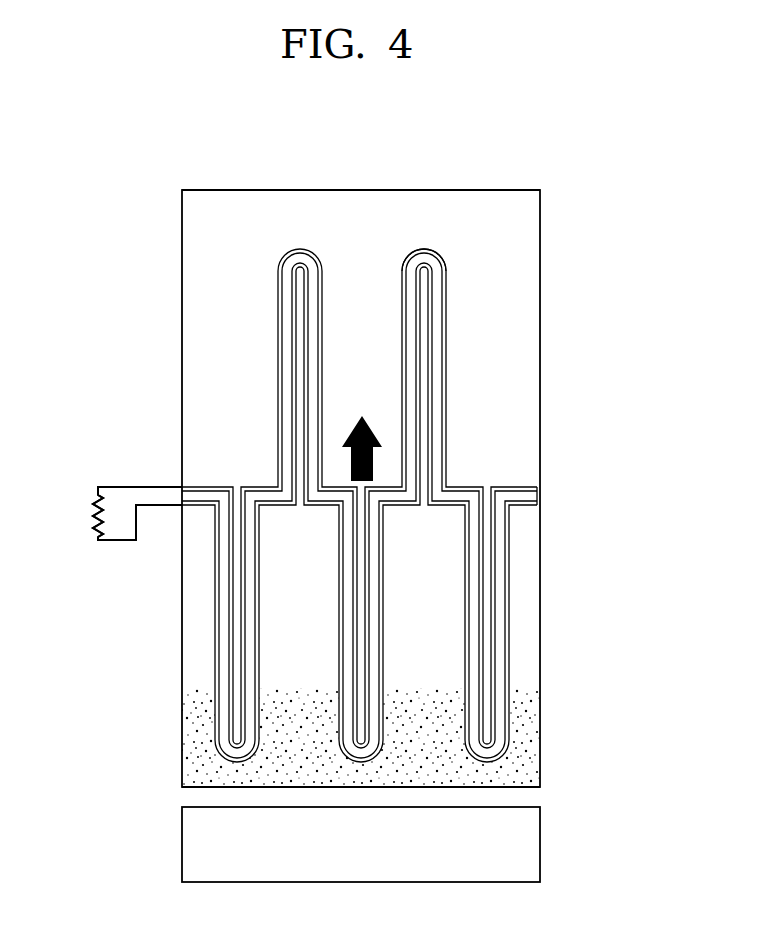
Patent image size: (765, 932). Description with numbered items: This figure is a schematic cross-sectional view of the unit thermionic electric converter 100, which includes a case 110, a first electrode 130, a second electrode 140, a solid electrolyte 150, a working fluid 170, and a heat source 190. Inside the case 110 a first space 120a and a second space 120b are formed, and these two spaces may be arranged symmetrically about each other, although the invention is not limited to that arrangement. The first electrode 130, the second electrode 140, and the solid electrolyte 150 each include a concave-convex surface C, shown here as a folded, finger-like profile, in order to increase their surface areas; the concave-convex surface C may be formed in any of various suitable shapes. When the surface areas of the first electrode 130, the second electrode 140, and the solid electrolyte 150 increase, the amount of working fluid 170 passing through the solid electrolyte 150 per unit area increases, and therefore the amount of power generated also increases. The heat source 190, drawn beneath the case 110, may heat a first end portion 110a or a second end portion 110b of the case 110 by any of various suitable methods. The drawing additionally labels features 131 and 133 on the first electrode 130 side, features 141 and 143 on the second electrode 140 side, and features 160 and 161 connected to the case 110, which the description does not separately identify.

The unit thermionic electric converter 100 is at (584, 116).
The case 110 is at (541, 348).
The first end portion 110a is at (362, 190).
The second end portion 110b is at (513, 787).
The first space 120a is at (500, 247).
The second space 120b is at (422, 703).
The first electrode 130 is at (417, 498).
The first outer sublayer 131 is at (538, 487).
The first inner sublayer 133 is at (538, 491).
The second electrode 140 is at (417, 512).
The second outer sublayer 141 is at (538, 505).
The second inner sublayer 143 is at (538, 501).
The solid electrolyte 150 is at (538, 496).
The power supply circuit 160 is at (110, 531).
The resistor 161 is at (93, 511).
The working fluid 170 is at (527, 755).
The heat source 190 is at (518, 853).
The concave-convex surface C is at (425, 240).